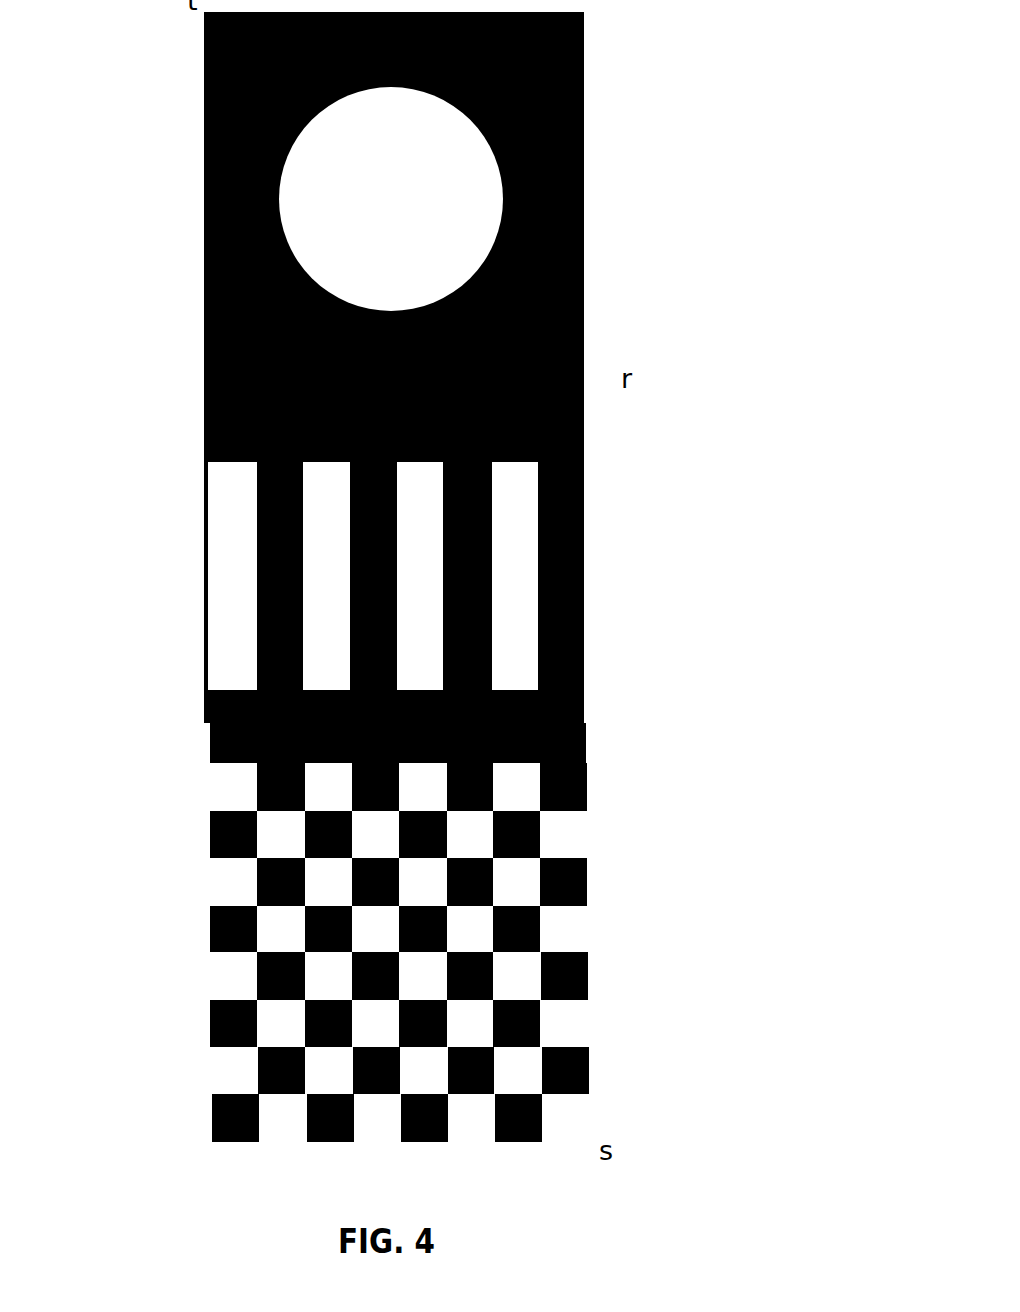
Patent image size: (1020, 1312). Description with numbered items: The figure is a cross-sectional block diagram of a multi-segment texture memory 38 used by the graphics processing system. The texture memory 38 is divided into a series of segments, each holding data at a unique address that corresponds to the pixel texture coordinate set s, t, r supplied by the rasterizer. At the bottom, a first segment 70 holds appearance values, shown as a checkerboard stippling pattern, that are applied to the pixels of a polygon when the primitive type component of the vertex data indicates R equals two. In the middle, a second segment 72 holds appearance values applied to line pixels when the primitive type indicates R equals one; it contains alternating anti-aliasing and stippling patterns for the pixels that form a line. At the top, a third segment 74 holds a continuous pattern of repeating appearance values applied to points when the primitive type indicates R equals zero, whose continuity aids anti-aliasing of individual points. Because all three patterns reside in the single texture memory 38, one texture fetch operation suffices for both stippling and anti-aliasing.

The texture memory 38 is at (104, 100).
The third segment 74 is at (579, 200).
The second segment 72 is at (467, 562).
The first segment 70 is at (588, 950).